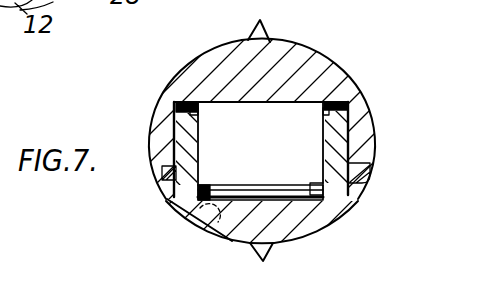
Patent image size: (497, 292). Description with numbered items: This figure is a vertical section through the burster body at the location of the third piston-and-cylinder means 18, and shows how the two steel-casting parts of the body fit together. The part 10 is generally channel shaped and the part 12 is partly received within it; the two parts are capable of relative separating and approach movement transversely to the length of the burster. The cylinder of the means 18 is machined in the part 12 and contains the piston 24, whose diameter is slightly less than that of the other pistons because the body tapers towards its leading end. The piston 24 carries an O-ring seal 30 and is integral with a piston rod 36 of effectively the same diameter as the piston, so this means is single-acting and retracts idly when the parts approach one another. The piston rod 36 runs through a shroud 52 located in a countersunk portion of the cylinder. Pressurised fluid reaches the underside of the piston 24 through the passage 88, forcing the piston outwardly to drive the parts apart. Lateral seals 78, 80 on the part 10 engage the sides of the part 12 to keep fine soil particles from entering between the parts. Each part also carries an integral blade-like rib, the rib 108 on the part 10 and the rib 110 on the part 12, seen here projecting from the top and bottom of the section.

The part 10 is at (338, 75).
The part 12 is at (329, 217).
The piston-and-cylinder means 18 is at (323, 130).
The piston 24 is at (255, 228).
The O-ring seal 30 is at (217, 185).
The piston rod 36 is at (279, 140).
The shroud 52 is at (175, 112).
The lateral seal 78 is at (165, 172).
The lateral seal 80 is at (371, 172).
The passage 88 is at (203, 222).
The blade-like rib 108 is at (260, 20).
The blade-like rib 110 is at (263, 261).